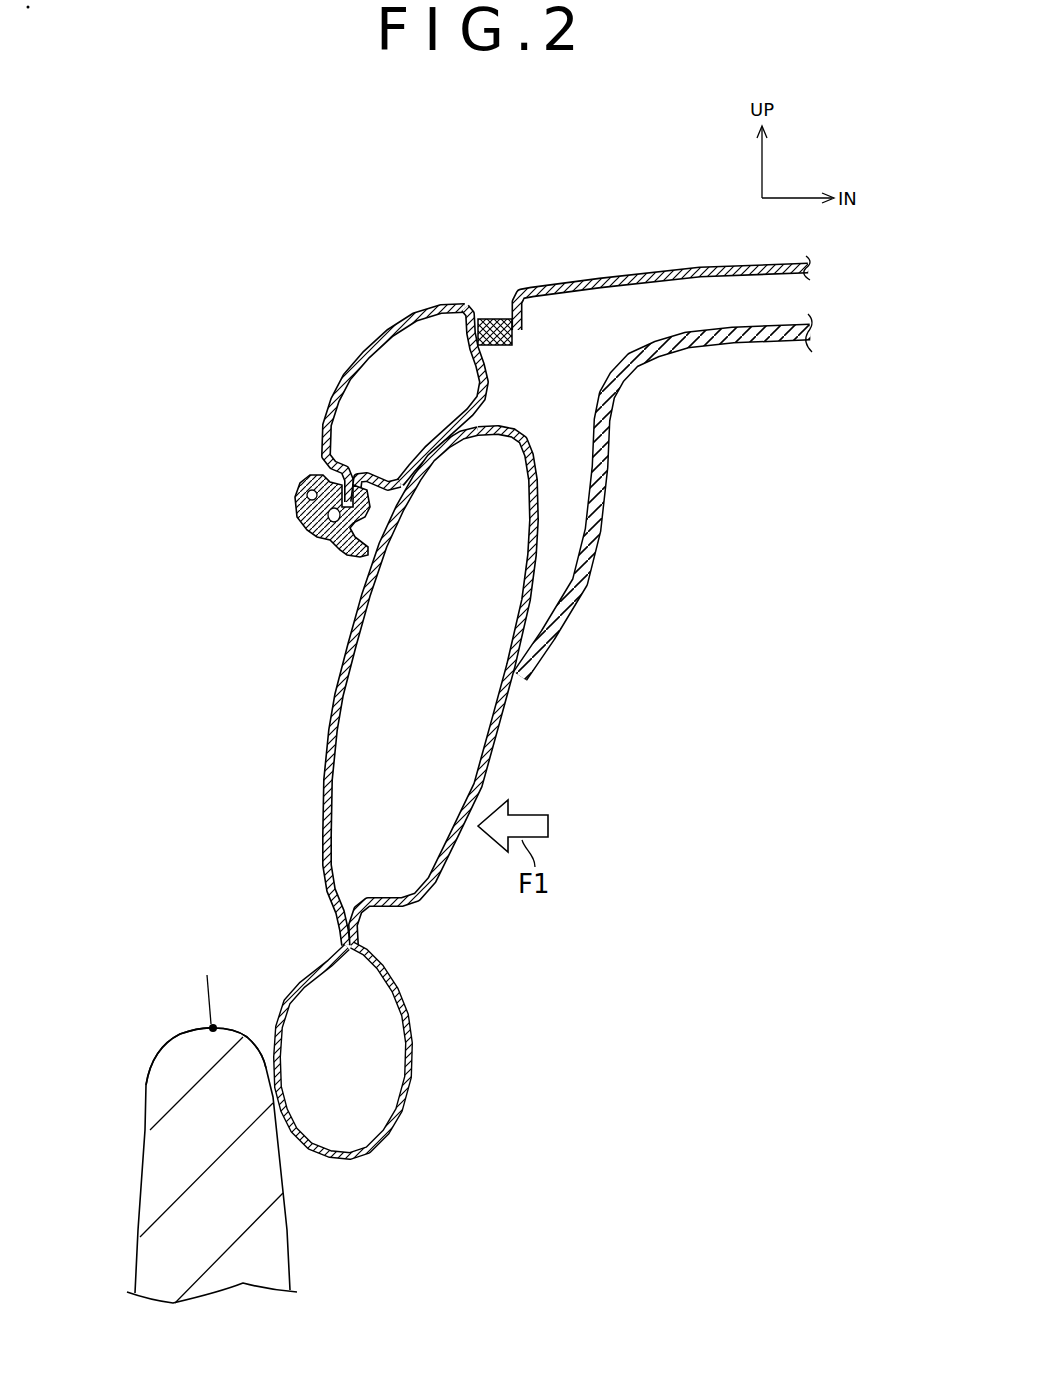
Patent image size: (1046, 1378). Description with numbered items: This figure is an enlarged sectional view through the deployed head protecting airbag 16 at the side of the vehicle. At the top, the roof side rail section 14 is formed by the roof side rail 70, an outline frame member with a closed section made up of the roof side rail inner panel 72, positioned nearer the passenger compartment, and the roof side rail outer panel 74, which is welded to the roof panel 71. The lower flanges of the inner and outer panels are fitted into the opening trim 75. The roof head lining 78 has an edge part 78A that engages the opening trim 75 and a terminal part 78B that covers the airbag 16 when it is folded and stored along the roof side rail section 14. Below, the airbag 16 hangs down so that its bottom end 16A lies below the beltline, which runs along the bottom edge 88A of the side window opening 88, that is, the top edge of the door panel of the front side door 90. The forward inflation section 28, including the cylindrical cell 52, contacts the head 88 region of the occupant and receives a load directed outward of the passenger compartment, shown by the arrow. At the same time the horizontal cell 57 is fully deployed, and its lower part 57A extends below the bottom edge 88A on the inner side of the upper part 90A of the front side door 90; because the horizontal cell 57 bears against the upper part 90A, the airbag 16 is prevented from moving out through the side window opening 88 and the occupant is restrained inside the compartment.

The roof side rail section 14 is at (420, 305).
The airbag 16 is at (530, 435).
The bottom end of the airbag 16A is at (342, 1162).
The forward inflation section 28 is at (407, 662).
The cylindrical cell 52 is at (322, 745).
The horizontal cell 57 is at (412, 1005).
The lower part of the horizontal cell 57A is at (272, 1085).
The roof side rail 70 is at (390, 362).
The roof panel 71 is at (698, 263).
The roof side rail inner panel 72 is at (442, 418).
The roof side rail outer panel 74 is at (330, 378).
The opening trim 75 is at (295, 496).
The roof head lining 78 is at (740, 350).
The edge part 78A is at (518, 688).
The terminal part 78B is at (610, 517).
The side window opening 88 is at (197, 1025).
The bottom edge of the side window opening 88A is at (236, 1030).
The front side door 90 is at (173, 1124).
The upper part of the front side door 90A is at (270, 1048).